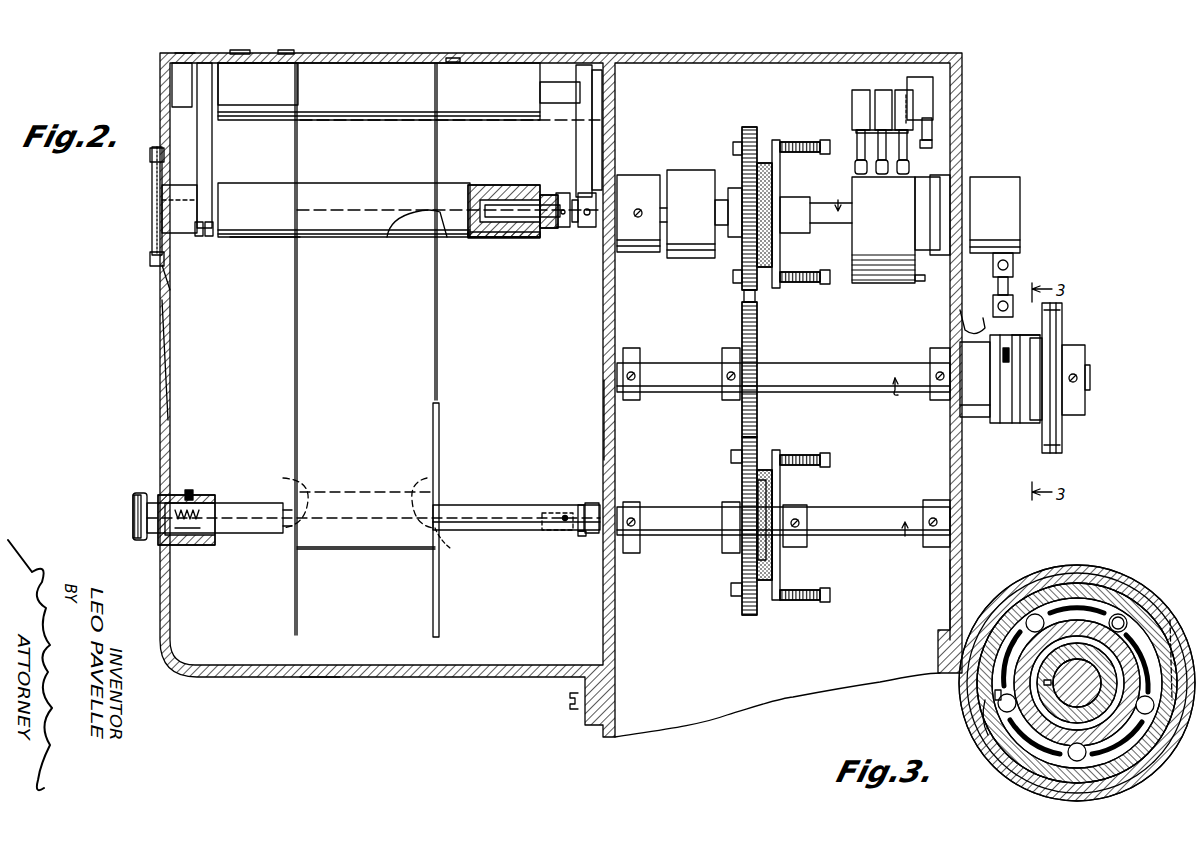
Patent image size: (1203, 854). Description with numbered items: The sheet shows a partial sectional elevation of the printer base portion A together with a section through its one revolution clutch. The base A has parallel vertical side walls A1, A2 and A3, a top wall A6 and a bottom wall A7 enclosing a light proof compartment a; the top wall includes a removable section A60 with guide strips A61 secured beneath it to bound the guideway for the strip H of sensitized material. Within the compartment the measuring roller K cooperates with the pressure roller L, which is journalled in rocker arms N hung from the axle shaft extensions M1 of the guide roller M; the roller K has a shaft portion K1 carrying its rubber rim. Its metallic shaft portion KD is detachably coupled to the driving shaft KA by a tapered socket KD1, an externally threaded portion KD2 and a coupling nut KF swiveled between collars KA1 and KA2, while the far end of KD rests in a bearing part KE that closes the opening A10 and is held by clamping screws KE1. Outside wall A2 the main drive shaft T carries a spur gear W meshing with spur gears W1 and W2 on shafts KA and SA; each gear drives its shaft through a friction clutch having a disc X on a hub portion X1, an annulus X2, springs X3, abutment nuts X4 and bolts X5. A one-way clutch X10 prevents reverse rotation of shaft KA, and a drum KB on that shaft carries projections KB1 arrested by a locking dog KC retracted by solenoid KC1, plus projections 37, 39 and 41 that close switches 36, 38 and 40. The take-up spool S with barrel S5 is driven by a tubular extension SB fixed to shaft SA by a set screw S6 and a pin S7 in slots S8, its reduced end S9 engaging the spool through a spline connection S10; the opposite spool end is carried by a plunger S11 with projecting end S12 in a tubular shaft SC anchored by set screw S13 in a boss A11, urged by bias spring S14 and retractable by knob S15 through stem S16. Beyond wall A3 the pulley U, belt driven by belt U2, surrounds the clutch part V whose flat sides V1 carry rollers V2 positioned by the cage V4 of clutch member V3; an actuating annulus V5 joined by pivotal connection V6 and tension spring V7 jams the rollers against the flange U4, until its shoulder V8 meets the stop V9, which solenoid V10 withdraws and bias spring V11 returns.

In FIG. 2, the base portion A is at (220, 687).
In FIG. 2, the side wall A1 is at (160, 355).
In FIG. 2, the side wall A2 is at (603, 422).
In FIG. 2, the side wall A3 is at (962, 590).
In FIG. 2, the top wall A6 is at (184, 52).
In FIG. 2, the bottom wall A7 is at (308, 678).
In FIG. 2, the opening A10 is at (160, 280).
In FIG. 2, the boss A11 is at (210, 496).
In FIG. 2, the removable top wall section A60 is at (236, 50).
In FIG. 2, the guide strips A61 is at (286, 50).
In FIG. 2, the strip H is at (415, 322).
In FIG. 2, the pressure roller L is at (440, 245).
In FIG. 2, the take-up spool S is at (440, 428).
In FIG. 2, the light proof compartment a is at (236, 335).
In FIG. 2, the guide roller M is at (268, 121).
In FIG. 2, the axle shaft extensions M1 is at (213, 106).
In FIG. 2, the rocker arms N is at (205, 164).
In FIG. 2, the measuring roller K is at (409, 210).
In FIG. 2, the roller shaft K1 is at (268, 240).
In FIG. 2, the locking dog KC is at (490, 184).
In FIG. 2, the solenoid KC1 is at (935, 102).
In FIG. 2, the shaft portion KD is at (203, 238).
In FIG. 2, the tapered socket KD1 is at (480, 238).
In FIG. 2, the externally threaded portion KD2 is at (515, 240).
In FIG. 2, the coupling nut KF is at (552, 230).
In FIG. 2, the driving shaft KA is at (590, 230).
In FIG. 2, the collar KA1 is at (575, 232).
In FIG. 2, the collar KA2 is at (563, 230).
In FIG. 2, the bearing part KE is at (175, 217).
In FIG. 2, the clamping screws KE1 is at (150, 262).
In FIG. 2, the drum KB is at (876, 285).
In FIG. 2, the projections KB1 is at (920, 282).
In FIG. 2, the barrel S5 is at (412, 550).
In FIG. 2, the set screw S6 is at (565, 521).
In FIG. 2, the pin S7 is at (590, 502).
In FIG. 2, the slots S8 is at (580, 506).
In FIG. 2, the reduced end S9 is at (432, 478).
In FIG. 2, the spline connection S10 is at (459, 548).
In FIG. 2, the plunger S11 is at (282, 534).
In FIG. 2, the projecting end portion S12 is at (296, 478).
In FIG. 2, the set screw S13 is at (190, 490).
In FIG. 2, the bias spring S14 is at (200, 545).
In FIG. 2, the knob S15 is at (140, 494).
In FIG. 2, the stem S16 is at (160, 535).
In FIG. 2, the driving shaft SA is at (878, 508).
In FIG. 2, the tubular extension SB is at (500, 505).
In FIG. 2, the tubular shaft SC is at (282, 505).
In FIG. 2, the main drive shaft T is at (818, 384).
In FIG. 2, the spur gear W is at (740, 410).
In FIG. 2, the spur gear W1 is at (735, 265).
In FIG. 2, the spur gear W2 is at (740, 468).
In FIG. 2, the disc X is at (772, 205).
In FIG. 2, the hub portion X1 is at (805, 228).
In FIG. 2, the annulus X2 is at (772, 247).
In FIG. 2, the springs X3 is at (782, 285).
In FIG. 2, the abutment nuts X4 is at (814, 284).
In FIG. 2, the bolts X5 is at (828, 284).
In FIG. 2, the one-way clutch X10 is at (688, 170).
In FIG. 2, the switch 36 is at (895, 114).
In FIG. 2, the projection 37 is at (904, 178).
In FIG. 2, the switch 38 is at (875, 106).
In FIG. 2, the projection 39 is at (856, 138).
In FIG. 2, the switch 40 is at (852, 96).
In FIG. 2, the projection 41 is at (848, 180).
In FIG. 2, the clutch part V is at (988, 418).
In FIG. 3, the flat sides V1 is at (1135, 770).
In FIG. 3, the rollers V2 is at (1118, 612).
In FIG. 2, the clutch member V3 is at (1015, 356).
In FIG. 3, the cage V4 is at (1063, 612).
In FIG. 2, the actuating member V5 is at (1006, 424).
In FIG. 3, the pivotal connection V6 is at (1173, 618).
In FIG. 3, the tension spring V7 is at (962, 712).
In FIG. 2, the shoulder V8 is at (1008, 342).
In FIG. 2, the stop V9 is at (1010, 318).
In FIG. 2, the solenoid V10 is at (1008, 190).
In FIG. 2, the bias spring V11 is at (966, 312).
In FIG. 2, the pulley U is at (1062, 425).
In FIG. 2, the belt U2 is at (1060, 450).
In FIG. 2, the cylindrical flange U4 is at (1032, 432).